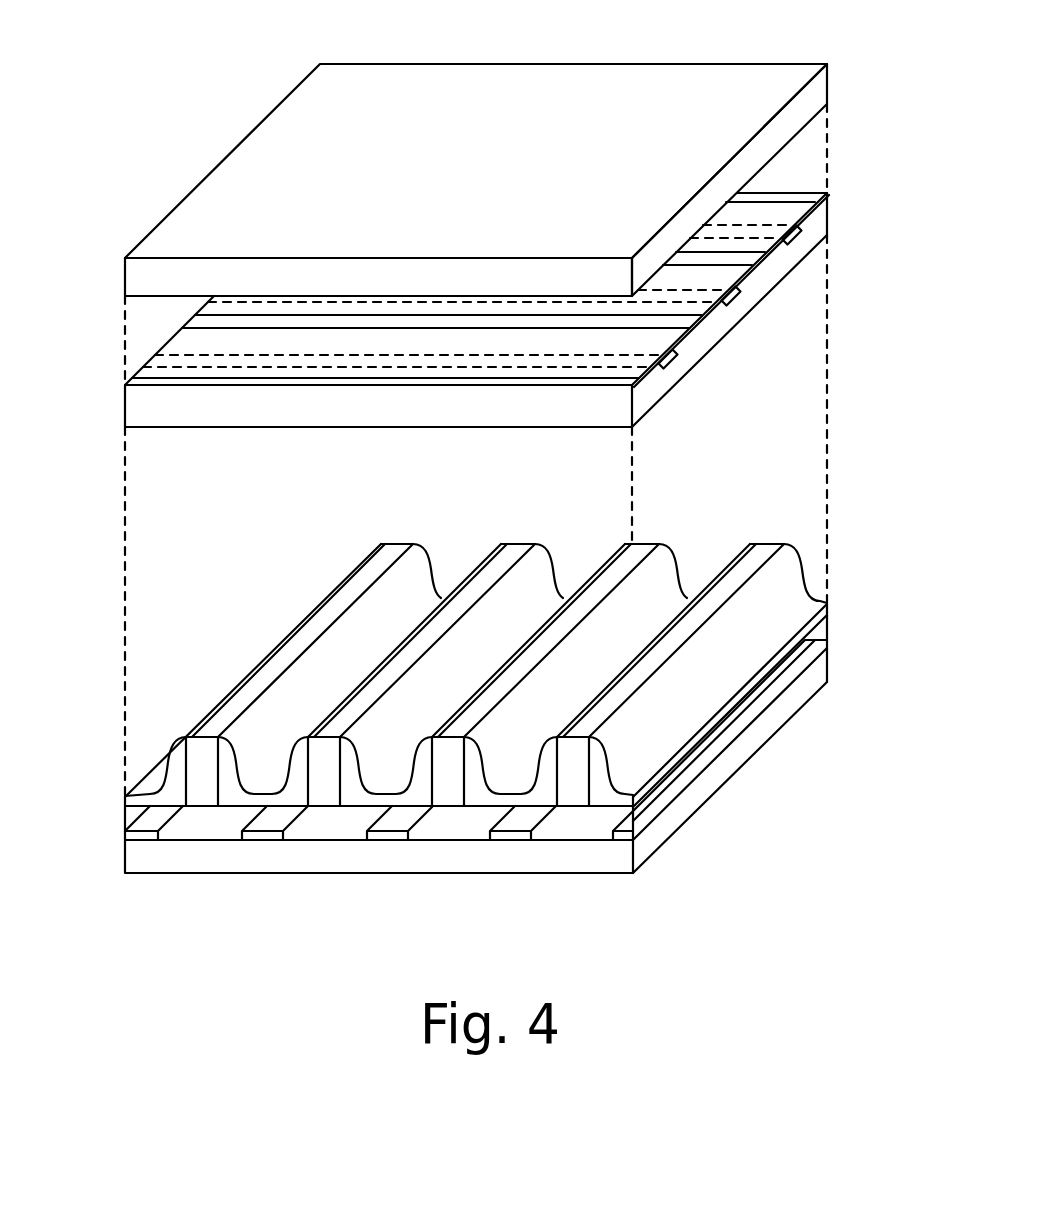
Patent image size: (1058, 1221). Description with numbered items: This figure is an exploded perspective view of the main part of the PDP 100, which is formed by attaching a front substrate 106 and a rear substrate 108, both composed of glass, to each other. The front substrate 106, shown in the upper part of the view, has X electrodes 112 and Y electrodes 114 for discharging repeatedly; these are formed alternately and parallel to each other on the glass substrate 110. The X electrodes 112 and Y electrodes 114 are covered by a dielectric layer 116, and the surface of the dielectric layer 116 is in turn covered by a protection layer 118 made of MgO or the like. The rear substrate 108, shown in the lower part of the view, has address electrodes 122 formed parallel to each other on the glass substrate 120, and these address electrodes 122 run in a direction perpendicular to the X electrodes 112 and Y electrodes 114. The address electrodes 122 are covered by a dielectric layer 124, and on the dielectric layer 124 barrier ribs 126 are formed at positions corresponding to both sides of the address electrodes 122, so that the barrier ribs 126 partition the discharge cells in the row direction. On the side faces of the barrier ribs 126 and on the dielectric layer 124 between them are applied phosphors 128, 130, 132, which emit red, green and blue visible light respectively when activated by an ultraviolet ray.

The PDP 100 is at (134, 104).
The front substrate 106 is at (848, 60).
The rear substrate 108 is at (848, 606).
The glass substrate 110 is at (522, 78).
The X electrodes 112 is at (801, 242).
The Y electrodes 114 is at (741, 306).
The dielectric layer 116 is at (648, 393).
The protection layer 118 is at (205, 431).
The glass substrate 120 is at (440, 857).
The address electrodes 122 is at (508, 838).
The dielectric layer 124 is at (582, 820).
The barrier ribs 126 is at (757, 550).
The phosphor 128 is at (410, 569).
The phosphor 130 is at (531, 569).
The phosphor 132 is at (657, 570).